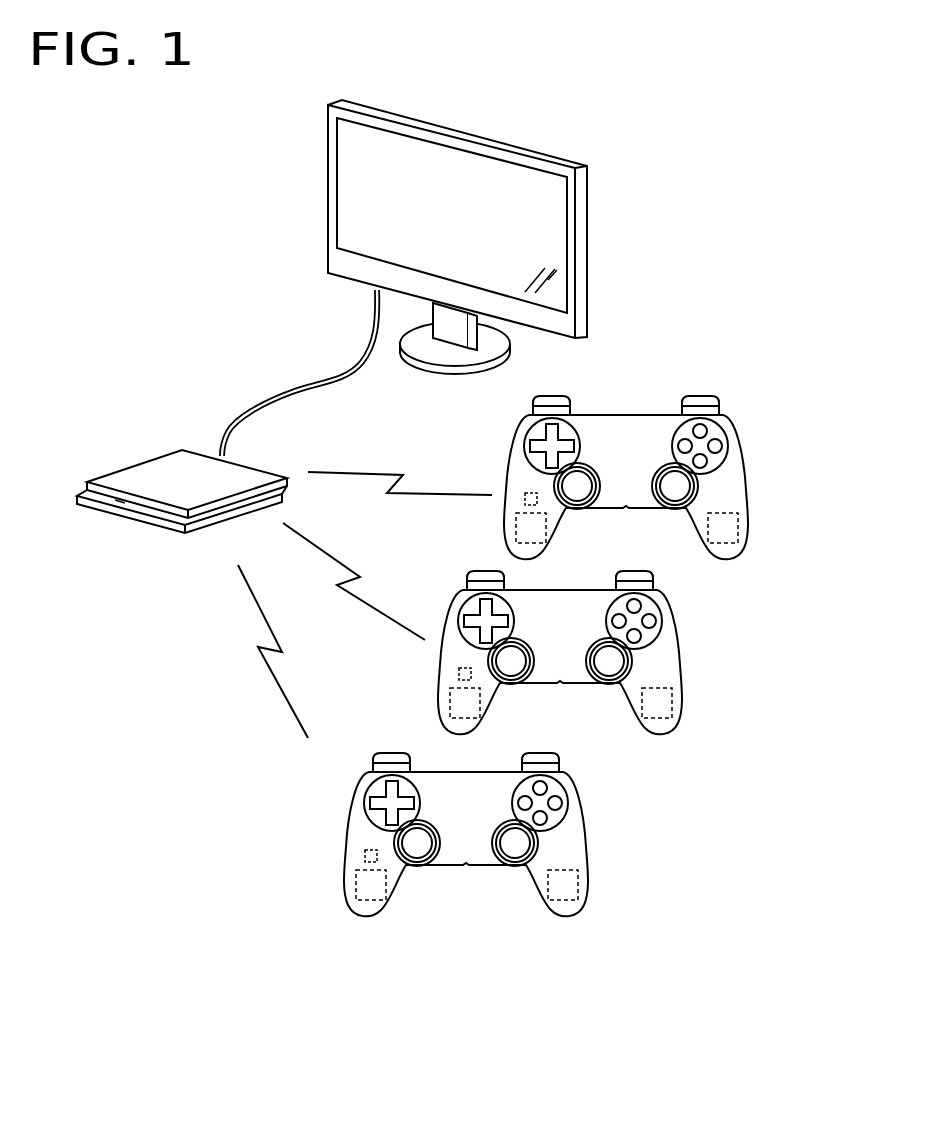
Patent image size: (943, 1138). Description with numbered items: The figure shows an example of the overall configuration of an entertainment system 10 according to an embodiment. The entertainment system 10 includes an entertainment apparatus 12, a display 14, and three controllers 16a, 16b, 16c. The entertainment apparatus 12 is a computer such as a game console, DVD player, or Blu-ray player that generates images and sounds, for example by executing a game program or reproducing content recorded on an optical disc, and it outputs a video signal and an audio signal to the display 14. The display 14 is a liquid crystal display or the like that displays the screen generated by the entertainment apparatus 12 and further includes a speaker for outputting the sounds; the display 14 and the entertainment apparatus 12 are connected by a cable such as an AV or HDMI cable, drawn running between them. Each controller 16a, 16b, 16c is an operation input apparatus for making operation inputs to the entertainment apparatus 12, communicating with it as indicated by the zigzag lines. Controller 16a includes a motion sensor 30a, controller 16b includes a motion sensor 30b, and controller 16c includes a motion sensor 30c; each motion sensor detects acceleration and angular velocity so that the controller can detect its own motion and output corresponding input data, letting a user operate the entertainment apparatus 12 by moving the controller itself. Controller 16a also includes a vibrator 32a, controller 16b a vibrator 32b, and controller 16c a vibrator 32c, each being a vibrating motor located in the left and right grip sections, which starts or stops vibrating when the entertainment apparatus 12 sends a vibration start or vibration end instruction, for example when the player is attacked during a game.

The entertainment system 10 is at (442, 972).
The entertainment apparatus 12 is at (132, 463).
The display 14 is at (588, 250).
The controller 16a is at (499, 834).
The controller 16b is at (593, 652).
The controller 16c is at (659, 477).
The motion sensor 30a is at (330, 840).
The motion sensor 30b is at (424, 658).
The motion sensor 30c is at (490, 483).
The vibrator 32a is at (467, 898).
The vibrator 32b is at (561, 716).
The vibrator 32c is at (627, 541).